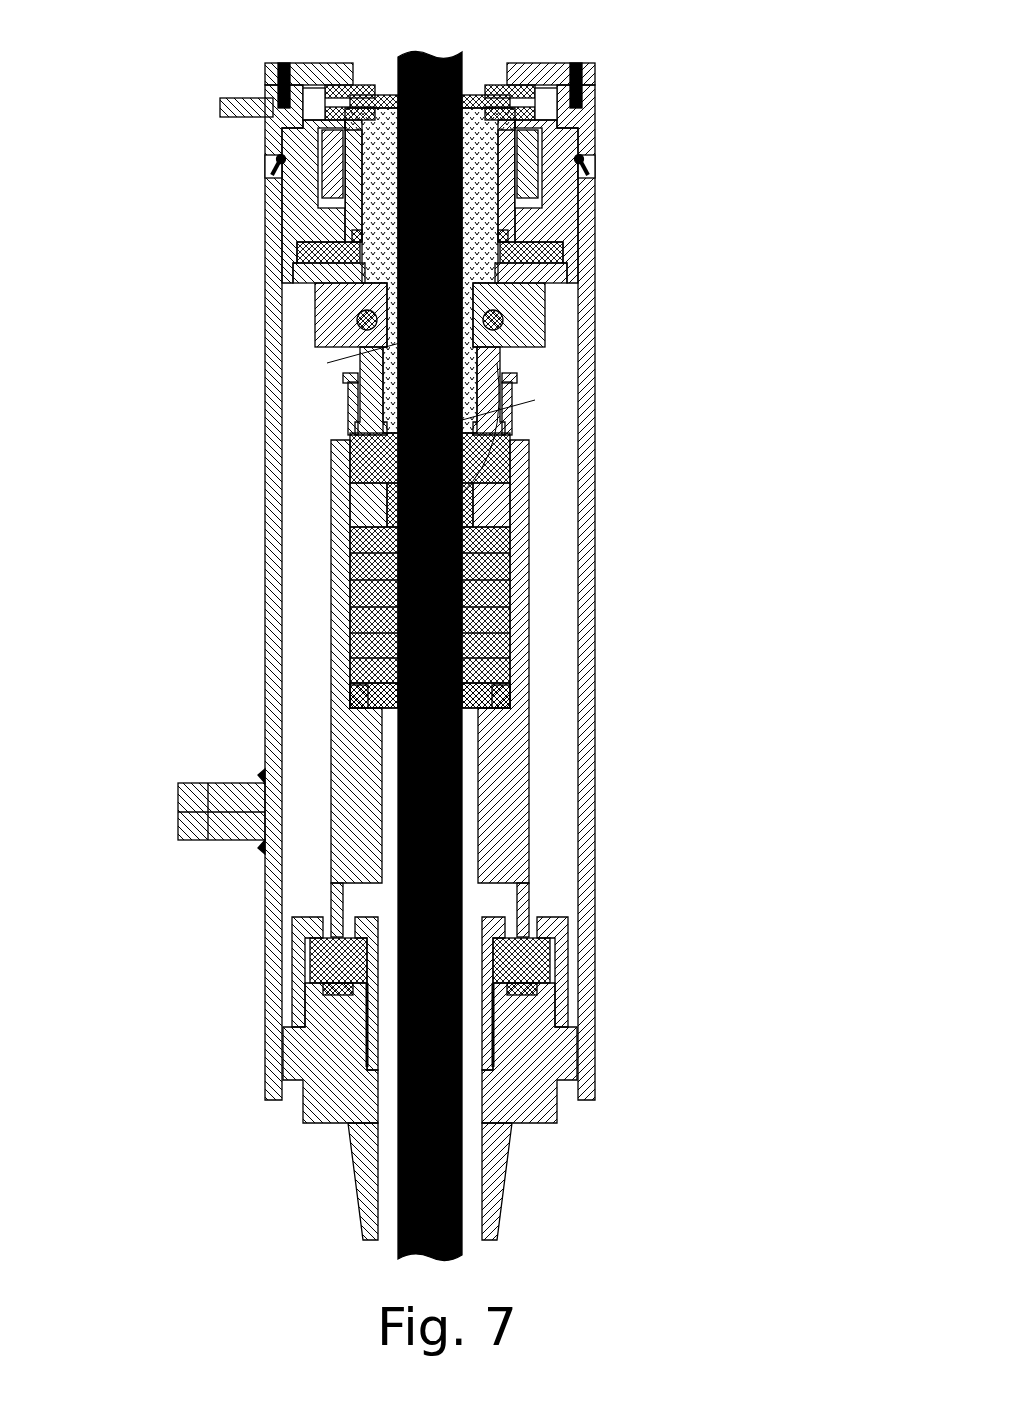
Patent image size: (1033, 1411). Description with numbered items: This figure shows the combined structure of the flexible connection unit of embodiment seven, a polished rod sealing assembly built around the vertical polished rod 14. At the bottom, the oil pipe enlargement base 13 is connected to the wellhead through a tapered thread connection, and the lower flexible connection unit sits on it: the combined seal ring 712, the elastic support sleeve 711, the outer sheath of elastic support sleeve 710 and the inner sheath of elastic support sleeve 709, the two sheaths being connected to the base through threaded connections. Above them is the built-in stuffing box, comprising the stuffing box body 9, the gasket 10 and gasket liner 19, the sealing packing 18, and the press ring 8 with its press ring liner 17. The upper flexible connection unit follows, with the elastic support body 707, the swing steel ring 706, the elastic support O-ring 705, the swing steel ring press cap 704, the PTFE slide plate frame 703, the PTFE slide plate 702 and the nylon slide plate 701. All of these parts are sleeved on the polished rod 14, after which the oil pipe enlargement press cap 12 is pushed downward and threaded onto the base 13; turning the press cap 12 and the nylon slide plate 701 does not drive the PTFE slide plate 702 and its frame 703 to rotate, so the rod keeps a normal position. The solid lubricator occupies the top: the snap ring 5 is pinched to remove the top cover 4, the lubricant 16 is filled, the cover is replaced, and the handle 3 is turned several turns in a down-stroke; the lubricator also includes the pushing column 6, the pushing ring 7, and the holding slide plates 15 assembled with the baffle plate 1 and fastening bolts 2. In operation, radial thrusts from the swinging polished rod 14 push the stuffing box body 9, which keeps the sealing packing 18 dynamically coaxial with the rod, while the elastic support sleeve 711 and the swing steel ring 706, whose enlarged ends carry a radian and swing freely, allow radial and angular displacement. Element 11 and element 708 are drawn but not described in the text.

The baffle plate 1 is at (262, 68).
The fastening bolts 2 is at (268, 88).
The handle 3 is at (237, 121).
The top cover 4 is at (262, 156).
The snap ring 5 is at (318, 193).
The pushing column 6 is at (340, 210).
The pushing ring 7 is at (360, 196).
The press ring 8 is at (347, 405).
The stuffing box body 9 is at (330, 568).
The gasket 10 is at (350, 690).
The side bolt 11 is at (213, 778).
The oil pipe enlargement press cap 12 is at (268, 946).
The oil pipe enlargement base 13 is at (300, 1048).
The polished rod 14 is at (400, 1190).
The holding slide plates 15 is at (575, 65).
The lubricant 16 is at (533, 163).
The press ring liner 17 is at (487, 507).
The sealing packing 18 is at (500, 610).
The gasket liner 19 is at (490, 695).
The nylon slide plate 701 is at (553, 237).
The PTFE slide plate 702 is at (545, 253).
The PTFE slide plate frame 703 is at (567, 270).
The swing steel ring press cap 704 is at (550, 300).
The elastic support O-ring 705 is at (507, 323).
The swing steel ring 706 is at (503, 370).
The elastic support body 707 is at (510, 462).
The lower sleeve extension 708 is at (533, 925).
The inner sheath of elastic support sleeve 709 is at (497, 963).
The outer sheath of elastic support sleeve 710 is at (573, 968).
The elastic support sleeve 711 is at (542, 972).
The combined seal ring 712 is at (533, 1007).